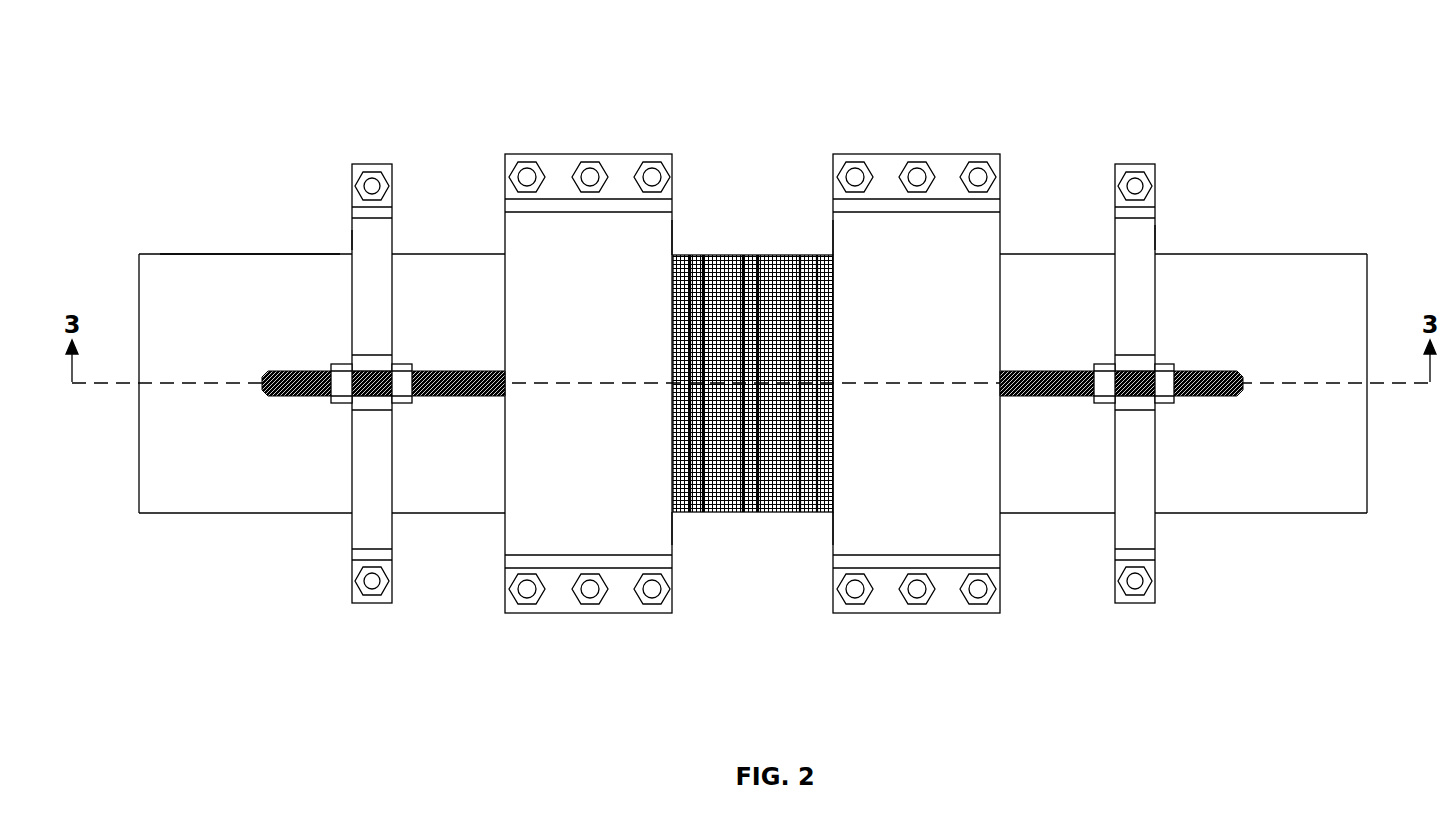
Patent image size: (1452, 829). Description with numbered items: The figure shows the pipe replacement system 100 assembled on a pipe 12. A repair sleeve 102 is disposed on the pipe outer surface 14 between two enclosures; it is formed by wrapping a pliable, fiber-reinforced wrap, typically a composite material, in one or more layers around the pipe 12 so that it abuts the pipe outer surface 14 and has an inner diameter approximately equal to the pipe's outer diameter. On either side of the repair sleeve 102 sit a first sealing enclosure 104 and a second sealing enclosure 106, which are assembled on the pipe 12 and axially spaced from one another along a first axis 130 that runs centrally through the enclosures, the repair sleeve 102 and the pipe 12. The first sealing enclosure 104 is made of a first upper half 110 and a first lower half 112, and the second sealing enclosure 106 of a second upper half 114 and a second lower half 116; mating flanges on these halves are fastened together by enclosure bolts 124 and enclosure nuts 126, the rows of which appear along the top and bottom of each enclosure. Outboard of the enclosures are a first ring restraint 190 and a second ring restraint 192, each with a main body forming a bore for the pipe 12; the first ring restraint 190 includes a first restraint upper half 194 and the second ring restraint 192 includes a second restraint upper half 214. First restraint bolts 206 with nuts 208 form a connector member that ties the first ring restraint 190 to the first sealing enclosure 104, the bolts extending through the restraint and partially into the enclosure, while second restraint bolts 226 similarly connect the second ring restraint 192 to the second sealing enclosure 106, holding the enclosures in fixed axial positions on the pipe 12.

The pipe replacement system 100 is at (190, 72).
The pipe 12 is at (162, 249).
The pipe outer surface 14 is at (198, 252).
The first axis 130 is at (112, 385).
The repair sleeve 102 is at (767, 248).
The first sealing enclosure 104 is at (500, 235).
The second sealing enclosure 106 is at (1006, 235).
The first upper half 110 is at (673, 238).
The first lower half 112 is at (673, 535).
The second upper half 114 is at (832, 226).
The second lower half 116 is at (833, 535).
The enclosure bolts 124 is at (527, 176).
The enclosure nuts 126 is at (533, 165).
The first ring restraint 190 is at (371, 158).
The second ring restraint 192 is at (1137, 158).
The first restraint upper half 194 is at (351, 240).
The second restraint upper half 214 is at (1156, 232).
The first restraint bolts 206 is at (500, 397).
The nuts 208 is at (400, 404).
The second restraint bolts 226 is at (1073, 399).